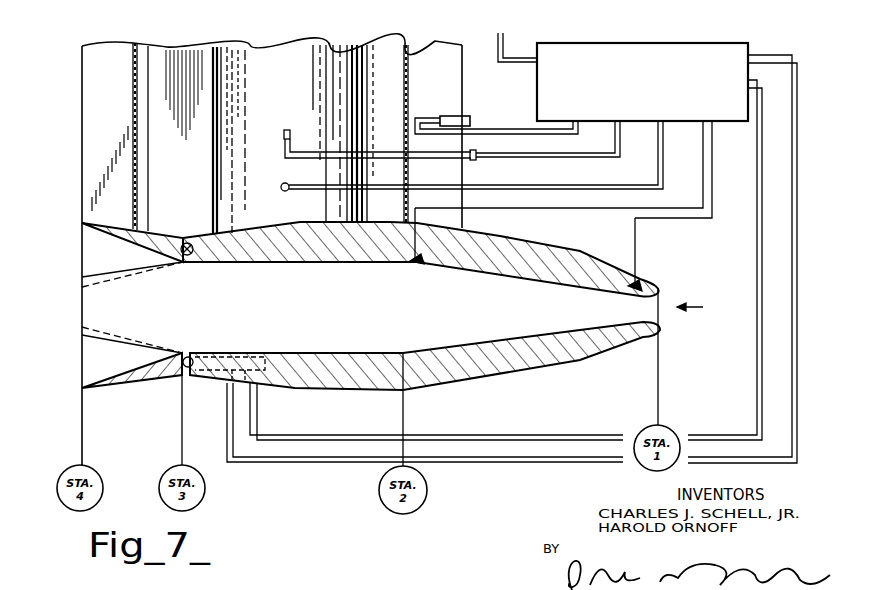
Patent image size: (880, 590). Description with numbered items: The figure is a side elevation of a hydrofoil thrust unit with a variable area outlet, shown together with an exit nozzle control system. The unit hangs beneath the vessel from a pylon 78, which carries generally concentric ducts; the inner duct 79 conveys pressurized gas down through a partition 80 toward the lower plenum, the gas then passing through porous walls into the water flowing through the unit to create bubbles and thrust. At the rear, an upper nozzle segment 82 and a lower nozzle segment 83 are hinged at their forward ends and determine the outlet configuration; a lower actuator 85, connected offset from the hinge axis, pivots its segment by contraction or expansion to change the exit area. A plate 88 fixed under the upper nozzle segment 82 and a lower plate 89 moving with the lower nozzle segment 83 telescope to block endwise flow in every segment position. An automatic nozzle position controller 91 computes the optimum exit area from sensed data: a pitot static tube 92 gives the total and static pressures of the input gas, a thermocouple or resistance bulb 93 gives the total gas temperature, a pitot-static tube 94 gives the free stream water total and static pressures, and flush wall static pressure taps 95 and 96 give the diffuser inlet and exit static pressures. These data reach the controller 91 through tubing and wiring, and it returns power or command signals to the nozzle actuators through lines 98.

The pylon 78 is at (462, 90).
The inner duct 79 is at (278, 53).
The partition 80 is at (100, 303).
The upper nozzle segment 82 is at (160, 233).
The lower nozzle segment 83 is at (140, 388).
The lower actuator 85 is at (222, 378).
The plate 88 is at (93, 250).
The lower plate 89 is at (95, 355).
The automatic nozzle position controller 91 is at (733, 43).
The pitot static tube 92 is at (291, 133).
The thermocouple or resistance bulb 93 is at (290, 185).
The pitot-static tube 94 is at (456, 115).
The flush wall static pressure tap 95 is at (638, 286).
The flush wall static pressure tap 96 is at (422, 260).
The lines 98 is at (326, 462).